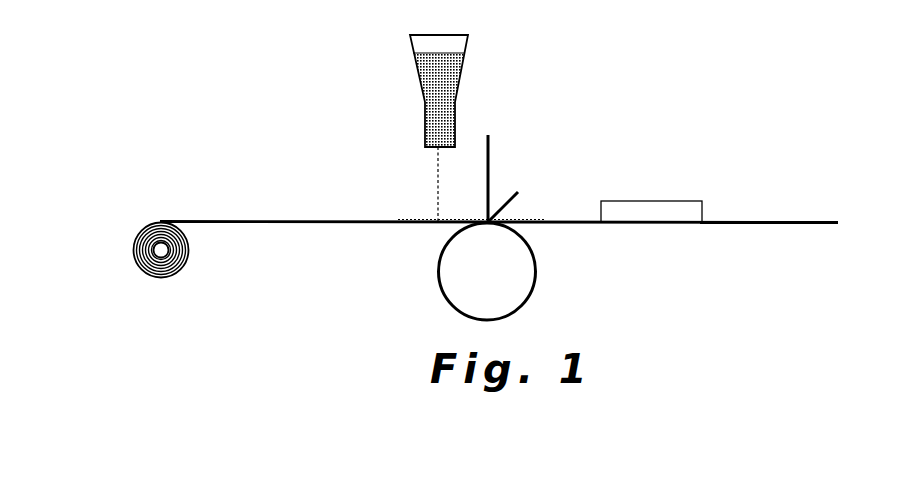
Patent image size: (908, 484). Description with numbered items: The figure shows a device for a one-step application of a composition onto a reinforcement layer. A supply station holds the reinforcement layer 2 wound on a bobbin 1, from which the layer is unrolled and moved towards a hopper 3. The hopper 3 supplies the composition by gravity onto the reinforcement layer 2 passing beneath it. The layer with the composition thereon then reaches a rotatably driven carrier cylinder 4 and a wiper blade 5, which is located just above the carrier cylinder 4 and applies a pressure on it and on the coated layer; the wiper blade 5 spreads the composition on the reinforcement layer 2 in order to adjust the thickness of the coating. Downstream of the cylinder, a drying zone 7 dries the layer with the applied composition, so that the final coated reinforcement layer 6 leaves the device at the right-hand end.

The bobbin 1 is at (135, 237).
The reinforcement layer 2 is at (343, 223).
The hopper 3 is at (422, 50).
The carrier cylinder 4 is at (535, 288).
The wiper blade 5 is at (503, 182).
The coated reinforcement layer 6 is at (762, 225).
The drying zone 7 is at (653, 212).